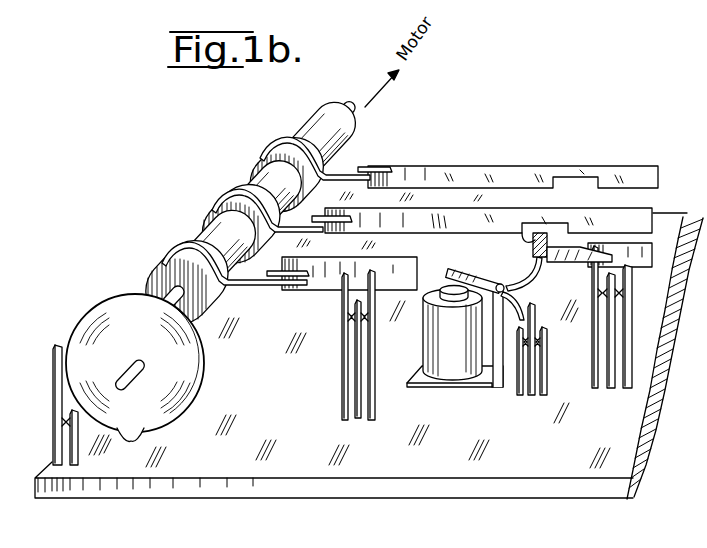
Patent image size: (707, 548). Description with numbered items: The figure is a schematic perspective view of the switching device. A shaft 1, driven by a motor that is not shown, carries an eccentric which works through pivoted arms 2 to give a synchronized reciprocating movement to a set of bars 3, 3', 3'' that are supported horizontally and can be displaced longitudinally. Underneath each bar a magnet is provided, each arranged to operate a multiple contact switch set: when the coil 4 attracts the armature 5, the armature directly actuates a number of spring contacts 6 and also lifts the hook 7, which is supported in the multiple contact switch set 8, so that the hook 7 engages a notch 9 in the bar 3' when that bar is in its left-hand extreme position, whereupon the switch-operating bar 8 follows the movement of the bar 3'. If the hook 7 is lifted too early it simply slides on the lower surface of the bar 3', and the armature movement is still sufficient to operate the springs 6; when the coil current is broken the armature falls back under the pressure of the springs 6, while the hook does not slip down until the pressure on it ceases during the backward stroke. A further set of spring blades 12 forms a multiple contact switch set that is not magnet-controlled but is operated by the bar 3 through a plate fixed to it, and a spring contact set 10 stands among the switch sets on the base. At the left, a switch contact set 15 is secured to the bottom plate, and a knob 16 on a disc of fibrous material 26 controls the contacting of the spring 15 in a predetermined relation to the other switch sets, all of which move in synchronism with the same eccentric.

The shaft 1 is at (135, 364).
The pivoted arms 2 is at (253, 275).
The bar 3 is at (349, 290).
The bar 3' is at (488, 236).
The third contact bar 3'' is at (513, 156).
The coil 4 is at (435, 346).
The armature 5 is at (468, 273).
The spring contacts 6 is at (540, 366).
The hook 7 is at (538, 252).
The multiple contact switch set 8 is at (647, 262).
The notch 9 is at (528, 232).
The contact spring set 10 is at (627, 330).
The spring blades 12 is at (353, 373).
The switch contact set 15 is at (67, 442).
The knob 16 is at (138, 440).
The disc of fibrous material 26 is at (190, 373).